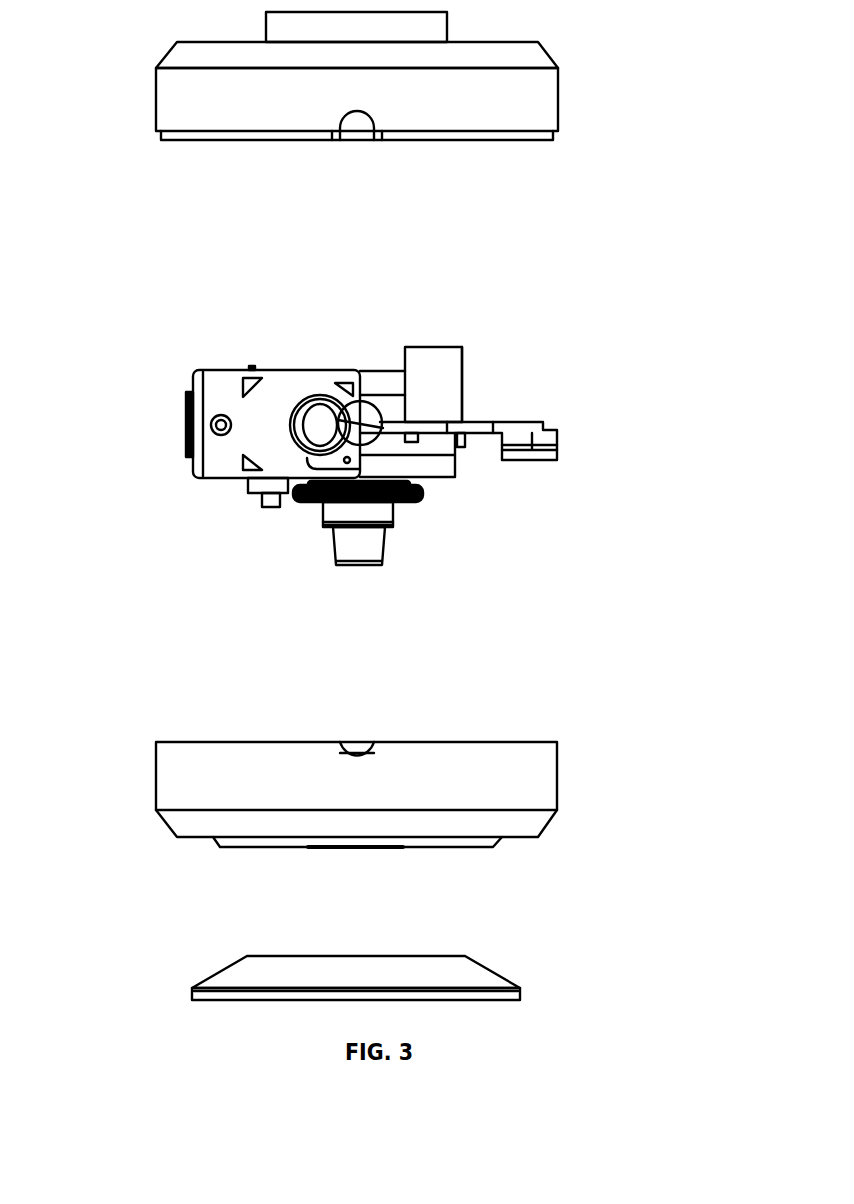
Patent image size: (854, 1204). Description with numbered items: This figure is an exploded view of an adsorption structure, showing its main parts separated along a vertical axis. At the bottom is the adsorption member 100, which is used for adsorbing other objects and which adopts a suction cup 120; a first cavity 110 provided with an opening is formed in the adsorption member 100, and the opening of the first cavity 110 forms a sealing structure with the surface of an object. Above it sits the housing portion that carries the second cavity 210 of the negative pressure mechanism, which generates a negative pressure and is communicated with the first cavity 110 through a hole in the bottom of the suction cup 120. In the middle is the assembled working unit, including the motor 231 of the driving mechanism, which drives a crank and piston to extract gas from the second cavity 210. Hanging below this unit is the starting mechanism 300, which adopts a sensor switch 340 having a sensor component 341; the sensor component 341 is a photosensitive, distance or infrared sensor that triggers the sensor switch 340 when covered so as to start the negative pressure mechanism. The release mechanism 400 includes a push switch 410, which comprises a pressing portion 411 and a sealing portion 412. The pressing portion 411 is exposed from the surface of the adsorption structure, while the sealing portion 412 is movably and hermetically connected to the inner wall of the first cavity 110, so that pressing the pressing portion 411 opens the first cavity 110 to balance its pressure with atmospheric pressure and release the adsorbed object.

The adsorption member 100 is at (605, 895).
The first cavity 110 is at (496, 1010).
The suction cup 120 is at (453, 975).
The second cavity 210 is at (460, 743).
The motor 231 is at (387, 371).
The starting mechanism 300 is at (225, 593).
The sensor switch 340 is at (252, 493).
The sensor component 341 is at (261, 505).
The release mechanism 400 is at (317, 370).
The push switch 410 is at (182, 293).
The pressing portion 411 is at (302, 400).
The sealing portion 412 is at (292, 447).